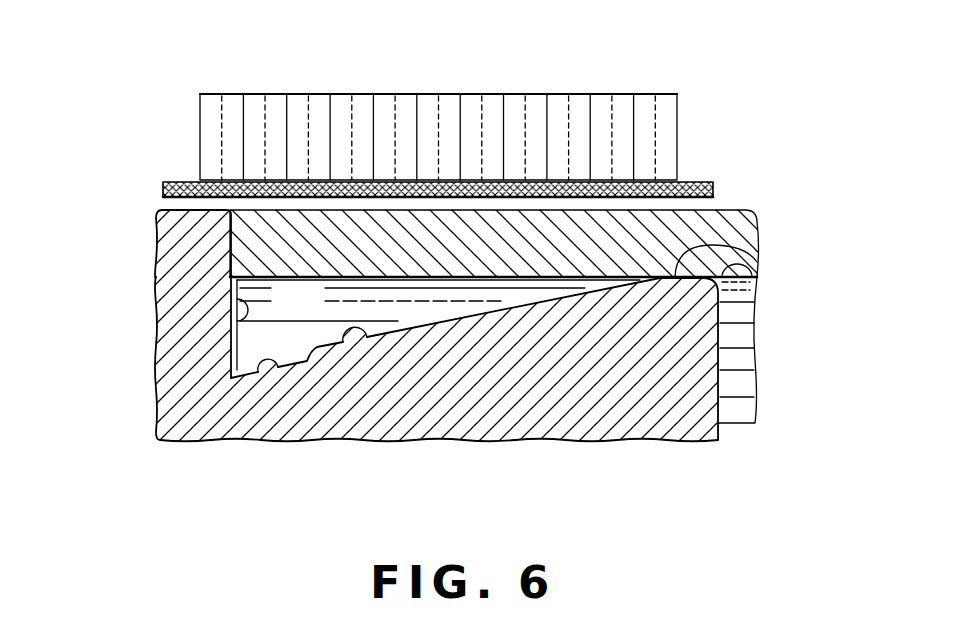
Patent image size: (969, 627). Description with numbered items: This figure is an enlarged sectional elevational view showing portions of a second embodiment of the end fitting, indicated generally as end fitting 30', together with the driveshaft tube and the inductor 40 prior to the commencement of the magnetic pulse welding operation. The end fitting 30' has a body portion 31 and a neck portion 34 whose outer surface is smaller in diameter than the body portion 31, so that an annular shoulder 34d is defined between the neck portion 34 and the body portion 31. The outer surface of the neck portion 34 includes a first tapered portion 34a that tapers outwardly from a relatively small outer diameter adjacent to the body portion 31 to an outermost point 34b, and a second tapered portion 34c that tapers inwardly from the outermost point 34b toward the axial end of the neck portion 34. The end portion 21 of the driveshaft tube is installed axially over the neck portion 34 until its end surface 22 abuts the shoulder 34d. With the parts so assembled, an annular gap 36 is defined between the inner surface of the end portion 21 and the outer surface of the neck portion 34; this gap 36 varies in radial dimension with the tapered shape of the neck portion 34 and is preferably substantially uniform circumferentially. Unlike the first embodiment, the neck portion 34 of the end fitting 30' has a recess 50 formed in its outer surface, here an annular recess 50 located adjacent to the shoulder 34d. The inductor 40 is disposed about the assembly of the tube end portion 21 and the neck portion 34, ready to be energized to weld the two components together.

The inductor 40 is at (575, 93).
The end portion 21 is at (743, 230).
The end surface 22 is at (230, 240).
The body portion 31 is at (177, 397).
The neck portion 34 is at (572, 408).
The first tapered portion 34a is at (367, 337).
The outermost point 34b is at (680, 250).
The second tapered portion 34c is at (755, 277).
The annular shoulder 34d is at (240, 312).
The annular gap 36 is at (316, 314).
The recess 50 is at (270, 375).
The end fitting 30' is at (134, 535).